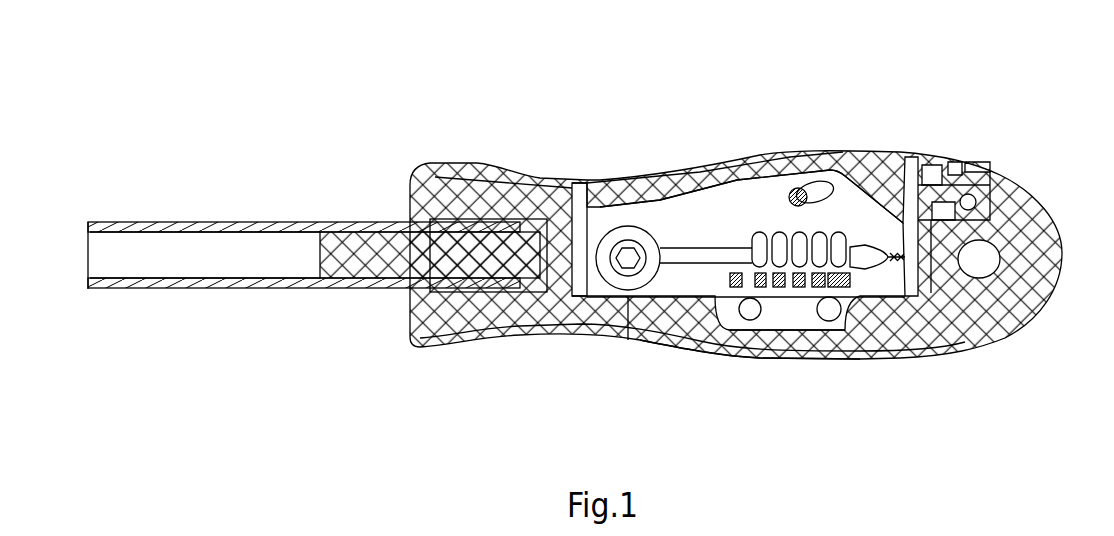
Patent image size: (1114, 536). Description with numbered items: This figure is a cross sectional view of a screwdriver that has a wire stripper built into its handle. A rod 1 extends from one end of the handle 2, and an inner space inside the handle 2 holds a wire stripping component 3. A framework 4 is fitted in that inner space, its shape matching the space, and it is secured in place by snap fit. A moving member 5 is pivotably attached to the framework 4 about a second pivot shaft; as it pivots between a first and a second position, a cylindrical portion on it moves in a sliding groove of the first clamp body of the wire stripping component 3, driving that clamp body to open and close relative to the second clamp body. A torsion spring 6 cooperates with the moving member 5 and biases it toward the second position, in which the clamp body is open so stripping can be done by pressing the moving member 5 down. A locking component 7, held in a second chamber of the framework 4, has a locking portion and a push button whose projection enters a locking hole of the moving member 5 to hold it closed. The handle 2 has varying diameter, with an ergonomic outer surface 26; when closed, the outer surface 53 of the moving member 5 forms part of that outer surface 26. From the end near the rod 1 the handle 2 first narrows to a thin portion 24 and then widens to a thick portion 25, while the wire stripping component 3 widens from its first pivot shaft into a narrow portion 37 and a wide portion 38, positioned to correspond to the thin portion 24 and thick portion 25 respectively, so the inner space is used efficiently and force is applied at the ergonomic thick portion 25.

The rod 1 is at (272, 222).
The handle 2 is at (1032, 218).
The wire stripping component 3 is at (720, 206).
The framework 4 is at (577, 183).
The moving member 5 is at (737, 182).
The torsion spring 6 is at (640, 226).
The locking component 7 is at (962, 146).
The thin portion 24 is at (585, 337).
The thick portion 25 is at (841, 355).
The outer surface 26 is at (745, 352).
The narrow portion 37 is at (627, 340).
The wide portion 38 is at (778, 332).
The outer surface 53 is at (708, 172).